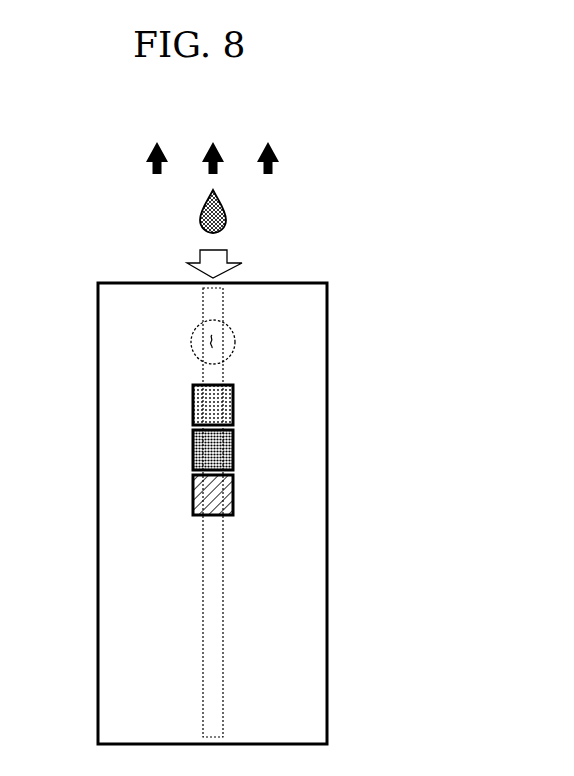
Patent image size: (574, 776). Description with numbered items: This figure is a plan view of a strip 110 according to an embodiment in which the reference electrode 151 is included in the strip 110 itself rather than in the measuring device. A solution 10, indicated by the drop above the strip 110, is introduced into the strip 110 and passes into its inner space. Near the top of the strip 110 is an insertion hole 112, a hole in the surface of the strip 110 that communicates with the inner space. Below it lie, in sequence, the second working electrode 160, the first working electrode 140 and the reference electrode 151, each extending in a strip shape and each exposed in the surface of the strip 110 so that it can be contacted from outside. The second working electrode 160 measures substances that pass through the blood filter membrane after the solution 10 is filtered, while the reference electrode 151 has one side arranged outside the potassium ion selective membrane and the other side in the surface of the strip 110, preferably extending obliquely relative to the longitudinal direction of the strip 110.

The solution 10 is at (227, 220).
The strip 110 is at (313, 572).
The insertion hole 112 is at (218, 342).
The second working electrode 160 is at (228, 405).
The first working electrode 140 is at (228, 453).
The reference electrode 151 is at (228, 498).